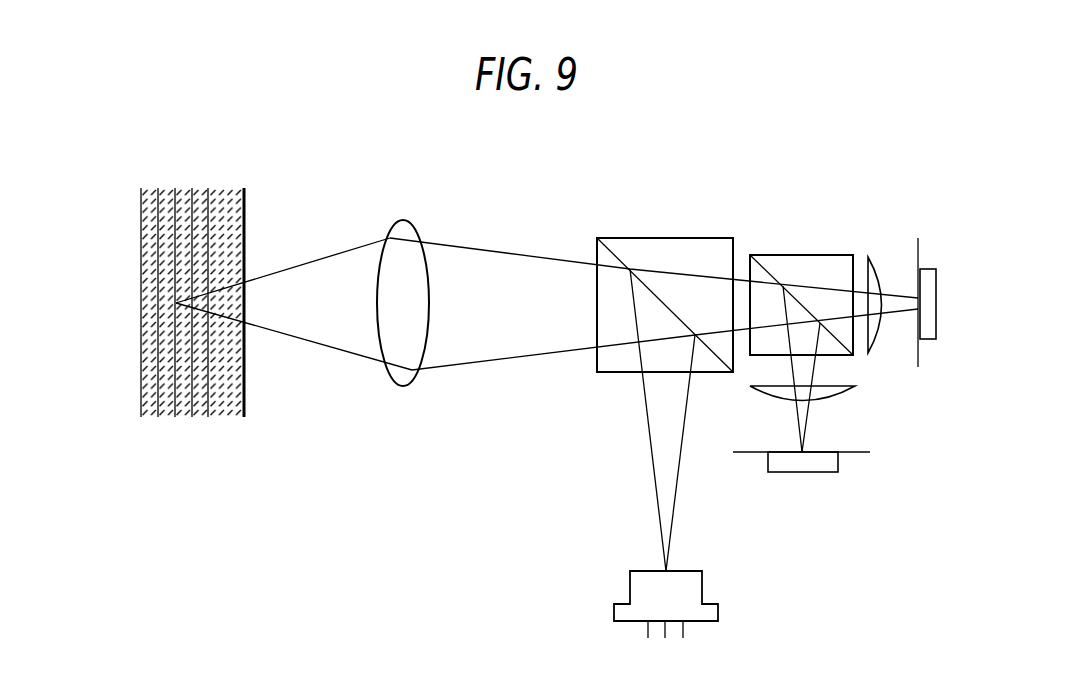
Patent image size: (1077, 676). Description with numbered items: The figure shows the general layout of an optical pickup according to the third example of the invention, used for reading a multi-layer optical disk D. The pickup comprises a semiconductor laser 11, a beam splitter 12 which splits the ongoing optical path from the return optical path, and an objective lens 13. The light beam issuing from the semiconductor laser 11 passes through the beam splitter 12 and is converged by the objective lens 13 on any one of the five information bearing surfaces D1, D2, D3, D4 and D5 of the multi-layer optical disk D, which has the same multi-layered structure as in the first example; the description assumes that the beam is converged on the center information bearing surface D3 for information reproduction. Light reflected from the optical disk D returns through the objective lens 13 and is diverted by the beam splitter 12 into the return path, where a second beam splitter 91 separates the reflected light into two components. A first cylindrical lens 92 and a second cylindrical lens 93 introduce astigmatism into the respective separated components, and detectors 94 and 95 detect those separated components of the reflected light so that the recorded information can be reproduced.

The multi-layer optical disk D is at (207, 188).
The information bearing surface D1 is at (141, 417).
The information bearing surface D2 is at (158, 417).
The center information bearing surface D3 is at (175, 417).
The information bearing surface D4 is at (192, 417).
The information bearing surface D5 is at (208, 417).
The semiconductor laser 11 is at (718, 618).
The beam splitter 12 is at (663, 238).
The objective lens 13 is at (403, 220).
The second beam splitter 91 is at (805, 255).
The first cylindrical lens 92 is at (868, 257).
The second cylindrical lens 93 is at (855, 386).
The detector 94 is at (930, 269).
The detector 95 is at (838, 465).